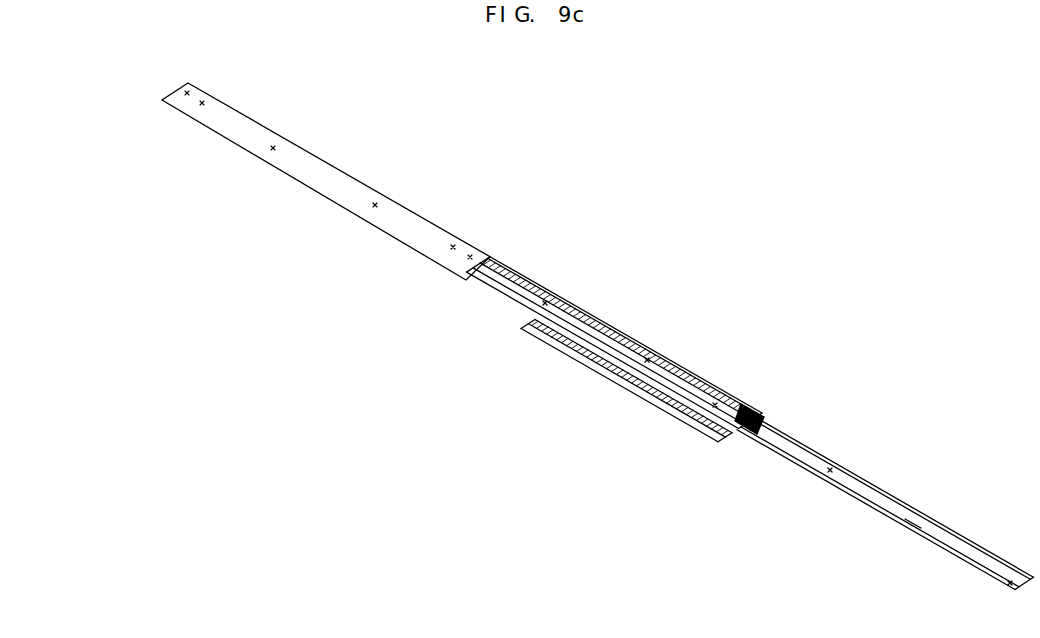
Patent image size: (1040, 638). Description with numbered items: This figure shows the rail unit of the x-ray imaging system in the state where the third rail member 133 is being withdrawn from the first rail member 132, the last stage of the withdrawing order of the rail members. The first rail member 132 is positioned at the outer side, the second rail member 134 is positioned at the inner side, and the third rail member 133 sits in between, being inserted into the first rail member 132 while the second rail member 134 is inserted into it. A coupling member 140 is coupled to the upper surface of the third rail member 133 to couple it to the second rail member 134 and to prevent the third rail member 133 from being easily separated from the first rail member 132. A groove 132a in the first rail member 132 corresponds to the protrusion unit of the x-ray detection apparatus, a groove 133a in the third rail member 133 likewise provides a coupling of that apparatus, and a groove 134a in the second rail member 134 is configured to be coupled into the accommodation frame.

The first rail member 132 is at (403, 218).
The groove 132a is at (452, 247).
The third rail member 133 is at (641, 344).
The groove 133a is at (717, 408).
The second rail member 134 is at (948, 538).
The groove 134a is at (913, 528).
The coupling member 140 is at (768, 410).